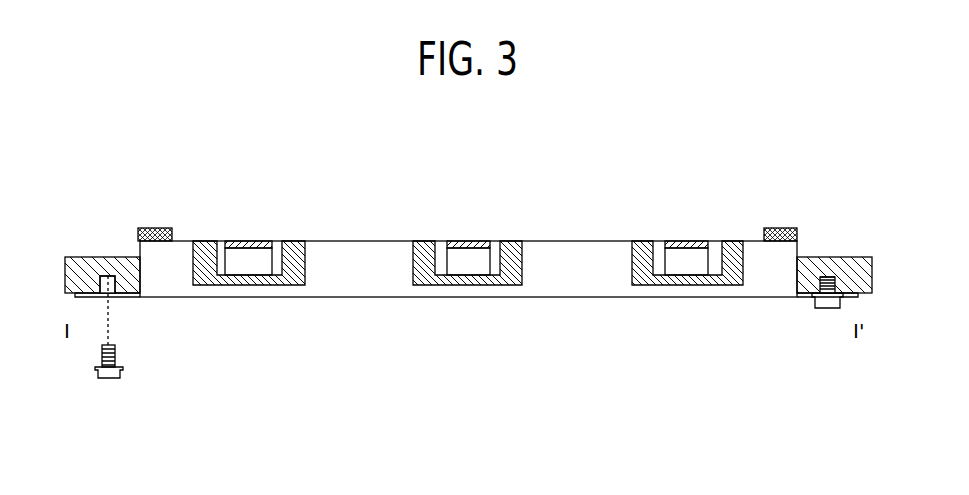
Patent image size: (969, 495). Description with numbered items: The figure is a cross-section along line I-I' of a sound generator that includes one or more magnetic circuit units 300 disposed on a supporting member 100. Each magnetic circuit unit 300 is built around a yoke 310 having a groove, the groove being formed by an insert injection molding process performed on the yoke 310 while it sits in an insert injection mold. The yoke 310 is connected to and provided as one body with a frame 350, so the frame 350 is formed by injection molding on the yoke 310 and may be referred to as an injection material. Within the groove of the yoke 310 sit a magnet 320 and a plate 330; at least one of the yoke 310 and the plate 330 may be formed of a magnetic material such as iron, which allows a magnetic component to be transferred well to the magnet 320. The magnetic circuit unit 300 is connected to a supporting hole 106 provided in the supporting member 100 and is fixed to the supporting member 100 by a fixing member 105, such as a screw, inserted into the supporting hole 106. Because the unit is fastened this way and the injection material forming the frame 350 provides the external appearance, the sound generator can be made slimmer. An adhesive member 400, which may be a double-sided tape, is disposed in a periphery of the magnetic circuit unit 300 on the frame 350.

The supporting member 100 is at (824, 278).
The fixing member 105 is at (113, 378).
The supporting hole 106 is at (105, 258).
The magnetic circuit unit 300 is at (468, 317).
The yoke 310 is at (731, 284).
The magnet 320 is at (466, 300).
The plate 330 is at (683, 276).
The frame 350 is at (572, 297).
The adhesive member 400 is at (768, 228).